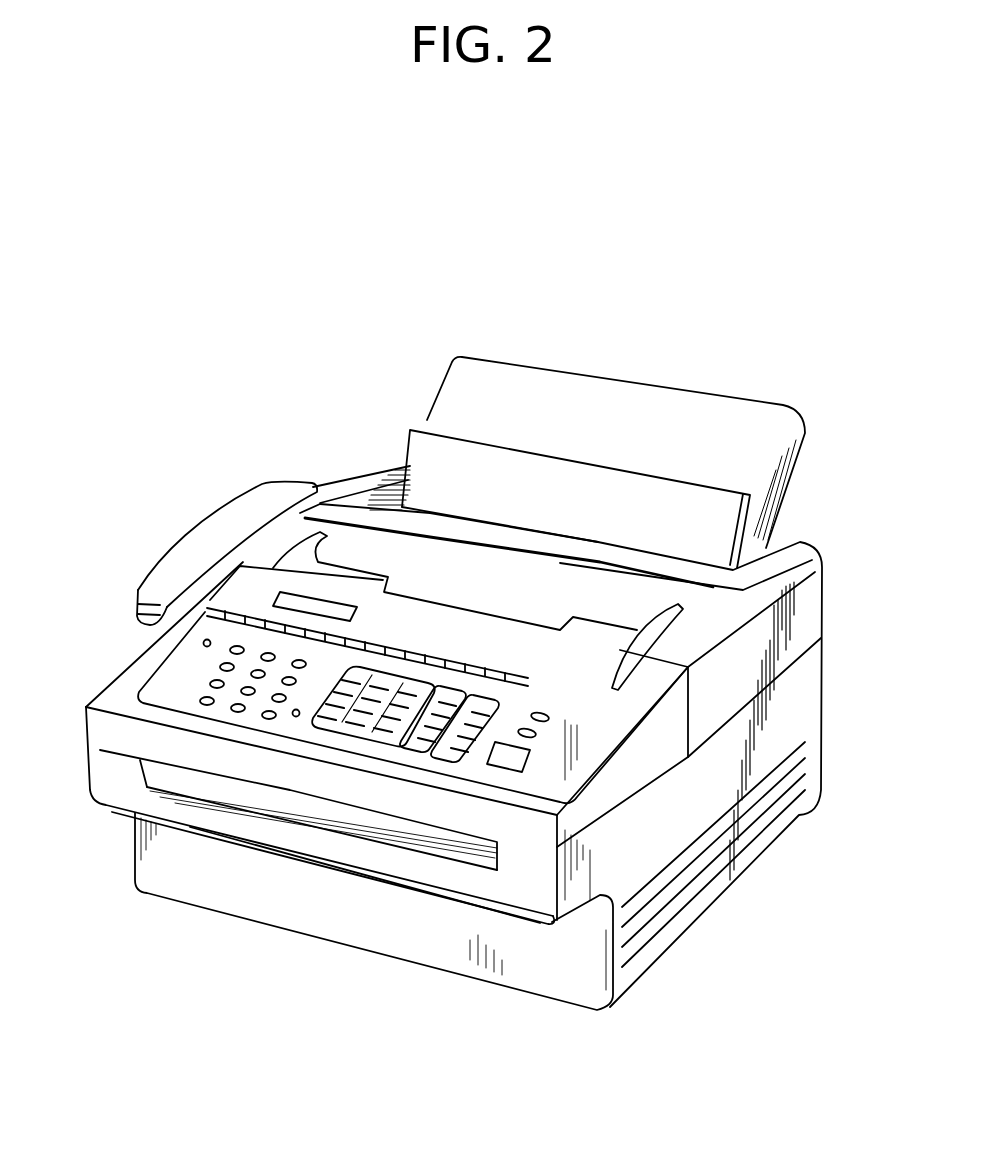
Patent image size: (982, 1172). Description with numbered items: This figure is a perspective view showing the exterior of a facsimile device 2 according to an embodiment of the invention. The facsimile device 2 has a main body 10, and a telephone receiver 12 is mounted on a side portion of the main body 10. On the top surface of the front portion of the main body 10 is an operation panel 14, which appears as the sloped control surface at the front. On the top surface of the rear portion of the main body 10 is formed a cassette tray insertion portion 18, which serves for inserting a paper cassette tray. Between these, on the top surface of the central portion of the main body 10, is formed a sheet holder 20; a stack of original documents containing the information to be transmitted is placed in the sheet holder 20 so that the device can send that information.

The facsimile device 2 is at (466, 341).
The main body 10 is at (805, 682).
The telephone receiver 12 is at (222, 525).
The operation panel 14 is at (157, 693).
The cassette tray insertion portion 18 is at (653, 413).
The sheet holder 20 is at (372, 543).